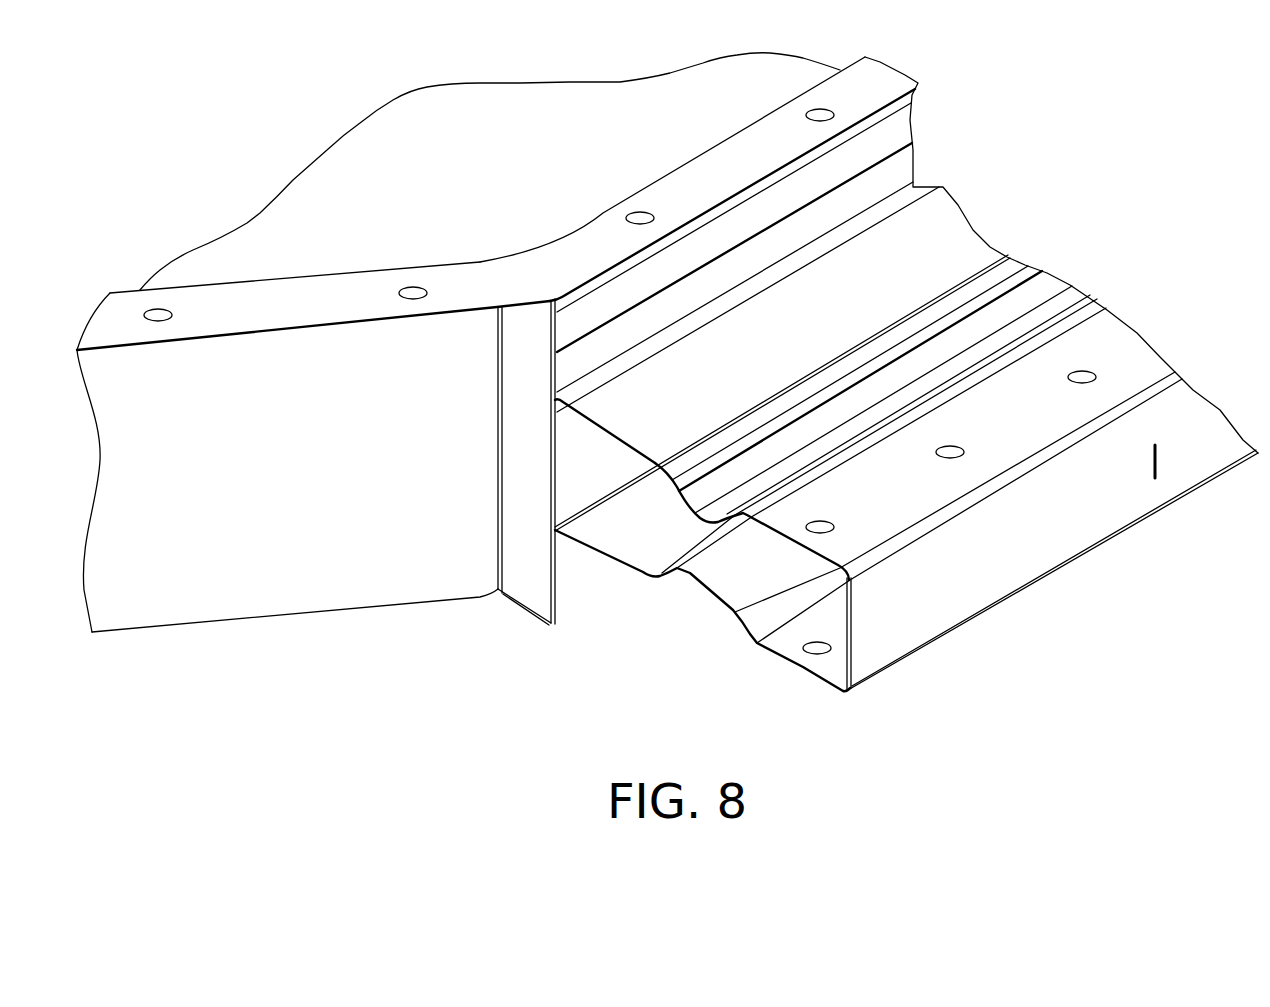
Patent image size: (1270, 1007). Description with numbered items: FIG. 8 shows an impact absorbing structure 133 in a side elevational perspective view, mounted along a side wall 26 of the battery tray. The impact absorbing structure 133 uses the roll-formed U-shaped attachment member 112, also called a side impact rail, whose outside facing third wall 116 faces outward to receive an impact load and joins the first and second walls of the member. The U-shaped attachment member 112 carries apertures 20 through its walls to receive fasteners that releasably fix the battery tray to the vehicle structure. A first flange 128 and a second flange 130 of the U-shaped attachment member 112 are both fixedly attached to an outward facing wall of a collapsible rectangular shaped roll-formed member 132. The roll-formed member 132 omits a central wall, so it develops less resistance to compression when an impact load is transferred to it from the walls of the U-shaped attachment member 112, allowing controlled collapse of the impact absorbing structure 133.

The apertures 20 is at (802, 646).
The side wall 26 is at (464, 588).
The roll-formed U-shaped attachment member 112 is at (730, 640).
The outside facing third wall 116 is at (887, 648).
The first flange 128 is at (563, 370).
The second flange 130 is at (563, 553).
The collapsible rectangular shaped roll-formed member 132 is at (523, 614).
The impact absorbing structure 133 is at (1025, 183).